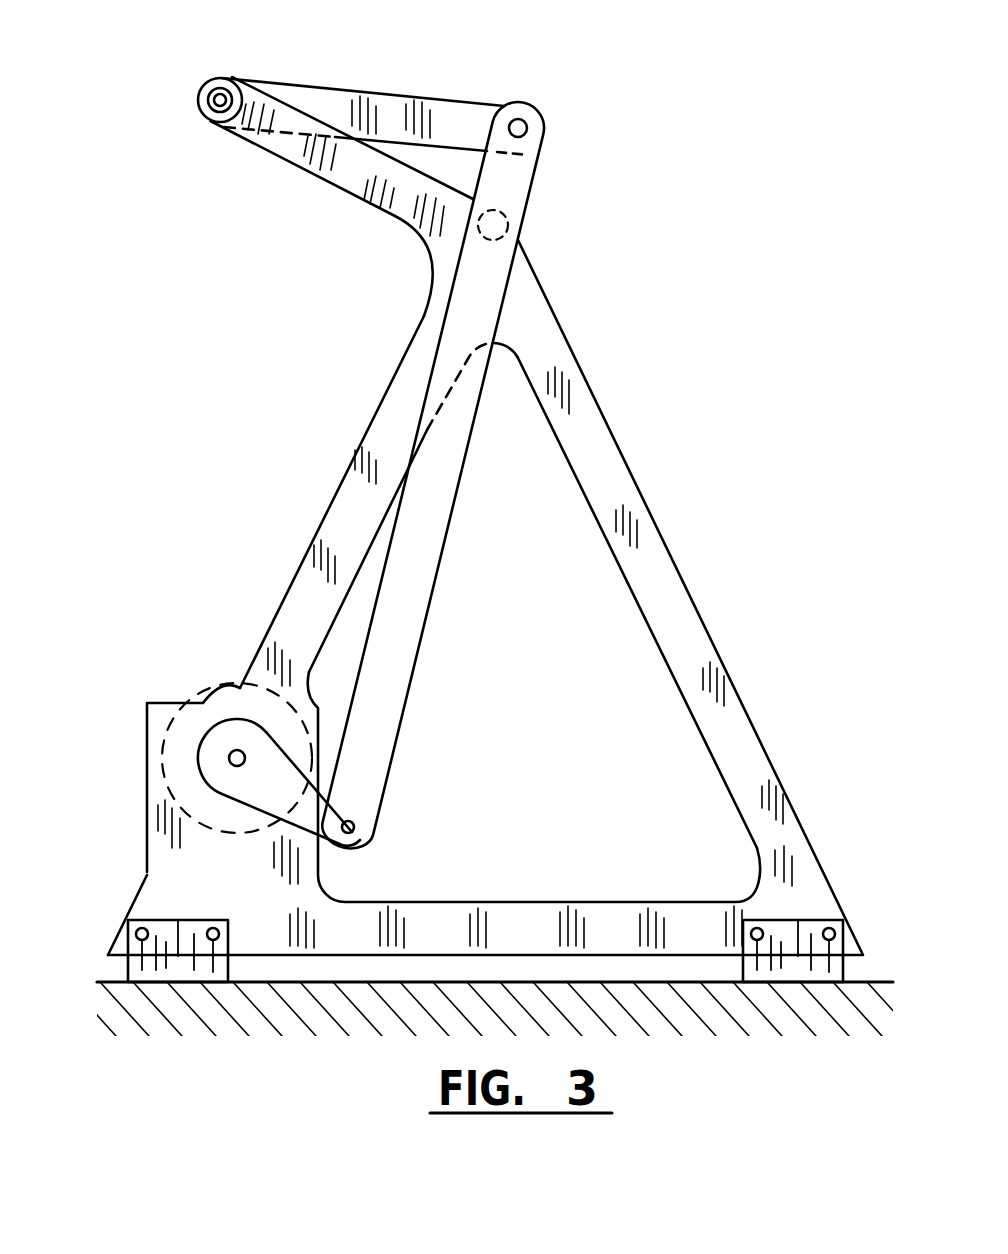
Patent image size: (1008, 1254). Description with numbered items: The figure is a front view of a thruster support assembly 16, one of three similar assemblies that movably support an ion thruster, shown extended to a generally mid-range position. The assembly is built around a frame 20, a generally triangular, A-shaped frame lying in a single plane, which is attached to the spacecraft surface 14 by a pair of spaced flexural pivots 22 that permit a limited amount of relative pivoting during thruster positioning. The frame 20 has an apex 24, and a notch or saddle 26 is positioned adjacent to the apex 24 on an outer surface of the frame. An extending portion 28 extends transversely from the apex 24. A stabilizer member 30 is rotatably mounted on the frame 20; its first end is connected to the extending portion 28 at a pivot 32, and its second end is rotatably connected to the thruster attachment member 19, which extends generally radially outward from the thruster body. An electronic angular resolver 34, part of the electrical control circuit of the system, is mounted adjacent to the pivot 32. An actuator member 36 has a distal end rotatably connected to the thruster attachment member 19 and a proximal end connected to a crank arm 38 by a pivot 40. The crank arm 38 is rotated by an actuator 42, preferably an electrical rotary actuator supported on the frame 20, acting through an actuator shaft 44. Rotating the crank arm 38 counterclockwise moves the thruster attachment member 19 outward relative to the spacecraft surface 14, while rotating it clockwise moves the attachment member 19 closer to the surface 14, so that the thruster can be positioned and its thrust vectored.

The spacecraft surface 14 is at (484, 978).
The thruster support assembly 16 is at (712, 182).
The thruster attachment member 19 is at (526, 131).
The frame 20 is at (617, 443).
The flexural pivots 22 is at (172, 912).
The apex 24 is at (538, 328).
The saddle 26 is at (502, 215).
The extending portion 28 is at (347, 172).
The stabilizer member 30 is at (303, 100).
The pivot 32 is at (221, 110).
The electronic angular resolver 34 is at (212, 78).
The actuator member 36 is at (412, 615).
The crank arm 38 is at (290, 738).
The pivot 40 is at (363, 832).
The actuator 42 is at (208, 692).
The actuator shaft 44 is at (222, 757).